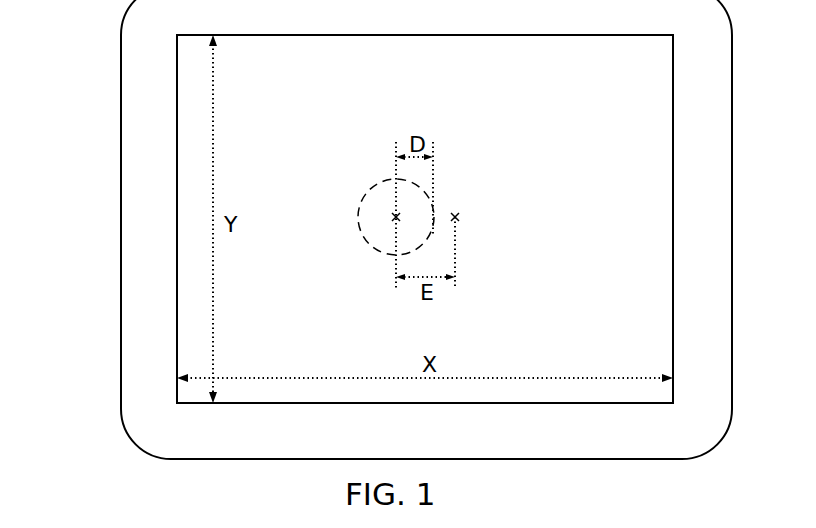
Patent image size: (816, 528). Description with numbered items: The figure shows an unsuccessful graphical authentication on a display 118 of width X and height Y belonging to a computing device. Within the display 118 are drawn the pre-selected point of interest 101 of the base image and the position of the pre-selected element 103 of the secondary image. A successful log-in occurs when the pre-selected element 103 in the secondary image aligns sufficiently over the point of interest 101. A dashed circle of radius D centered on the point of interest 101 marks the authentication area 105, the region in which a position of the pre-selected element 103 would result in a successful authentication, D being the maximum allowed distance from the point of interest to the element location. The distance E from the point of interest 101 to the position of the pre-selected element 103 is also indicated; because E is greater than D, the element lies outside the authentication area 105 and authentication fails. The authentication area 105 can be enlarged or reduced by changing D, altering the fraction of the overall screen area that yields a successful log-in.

The display 118 is at (133, 275).
The pre-selected point of interest 101 is at (394, 217).
The pre-selected element of the secondary image 103 is at (457, 217).
The authentication area 105 is at (372, 191).